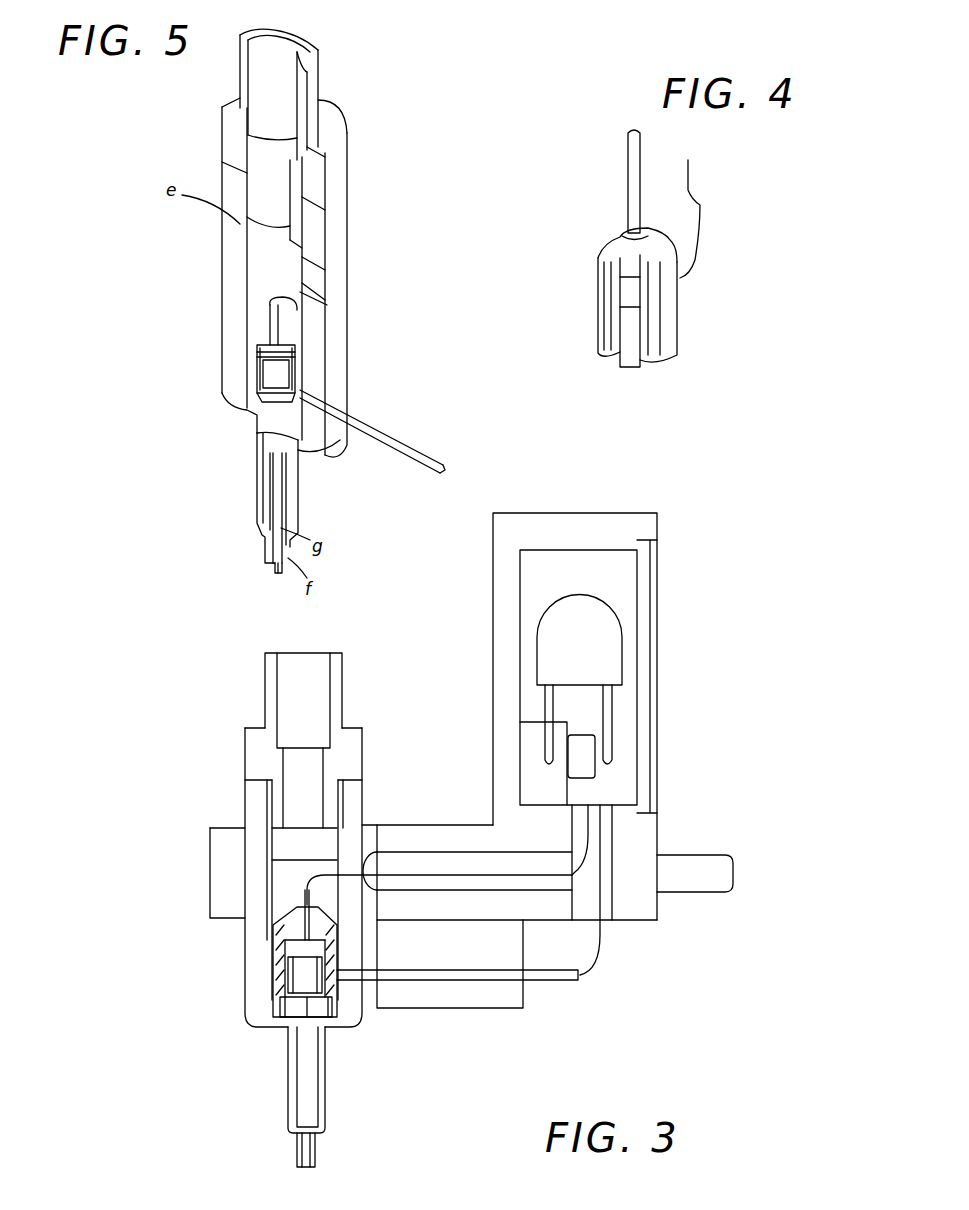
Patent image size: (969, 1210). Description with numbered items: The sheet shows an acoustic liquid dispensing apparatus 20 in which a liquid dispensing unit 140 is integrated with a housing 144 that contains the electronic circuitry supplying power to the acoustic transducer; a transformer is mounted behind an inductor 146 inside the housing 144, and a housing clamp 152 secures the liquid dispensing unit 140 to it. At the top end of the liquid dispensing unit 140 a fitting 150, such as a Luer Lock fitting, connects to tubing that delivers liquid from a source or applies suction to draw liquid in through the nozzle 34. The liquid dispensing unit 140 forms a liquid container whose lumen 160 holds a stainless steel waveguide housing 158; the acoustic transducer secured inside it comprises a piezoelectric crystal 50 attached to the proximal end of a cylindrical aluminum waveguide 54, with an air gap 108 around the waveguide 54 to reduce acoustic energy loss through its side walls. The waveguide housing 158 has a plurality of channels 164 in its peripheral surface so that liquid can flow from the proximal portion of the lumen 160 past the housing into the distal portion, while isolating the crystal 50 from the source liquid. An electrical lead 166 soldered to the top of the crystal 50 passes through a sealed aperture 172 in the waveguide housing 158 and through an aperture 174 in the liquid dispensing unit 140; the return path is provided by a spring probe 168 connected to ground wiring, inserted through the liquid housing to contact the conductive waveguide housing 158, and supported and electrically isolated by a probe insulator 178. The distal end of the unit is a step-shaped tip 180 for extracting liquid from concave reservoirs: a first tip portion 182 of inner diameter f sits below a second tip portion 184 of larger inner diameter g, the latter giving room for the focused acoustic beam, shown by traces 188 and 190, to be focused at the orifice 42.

In FIG. 3, the acoustic liquid dispensing apparatus 20 is at (712, 690).
In FIG. 5, the nozzle 34 is at (308, 463).
In FIG. 3, the nozzle 34 is at (325, 1077).
In FIG. 5, the orifice 42 is at (282, 576).
In FIG. 3, the orifice 42 is at (310, 1168).
In FIG. 5, the piezoelectric crystal 50 is at (275, 340).
In FIG. 5, the waveguide 54 is at (270, 362).
In FIG. 5, the air gap 108 is at (270, 372).
In FIG. 3, the air gap 108 is at (287, 983).
In FIG. 5, the liquid dispensing unit 140 is at (222, 125).
In FIG. 3, the liquid dispensing unit 140 is at (240, 952).
In FIG. 3, the housing 144 is at (493, 590).
In FIG. 3, the inductor 146 is at (596, 657).
In FIG. 5, the fitting 150 is at (276, 68).
In FIG. 3, the fitting 150 is at (270, 680).
In FIG. 3, the housing clamp 152 is at (222, 823).
In FIG. 5, the waveguide housing 158 is at (262, 320).
In FIG. 4, the waveguide housing 158 is at (605, 245).
In FIG. 3, the waveguide housing 158 is at (290, 930).
In FIG. 5, the lumen 160 is at (258, 270).
In FIG. 3, the lumen 160 is at (290, 877).
In FIG. 4, the channels 164 is at (608, 324).
In FIG. 4, the electrical lead 166 is at (626, 166).
In FIG. 4, the spring probe 168 is at (700, 190).
In FIG. 3, the spring probe 168 is at (602, 942).
In FIG. 5, the sealed aperture 172 is at (312, 300).
In FIG. 5, the aperture 174 is at (325, 262).
In FIG. 5, the probe insulator 178 is at (425, 445).
In FIG. 3, the probe insulator 178 is at (548, 983).
In FIG. 5, the step-shaped tip 180 is at (257, 513).
In FIG. 5, the first tip portion 182 is at (287, 563).
In FIG. 5, the second tip portion 184 is at (257, 440).
In FIG. 5, the trace 188 is at (286, 490).
In FIG. 5, the trace 190 is at (270, 456).